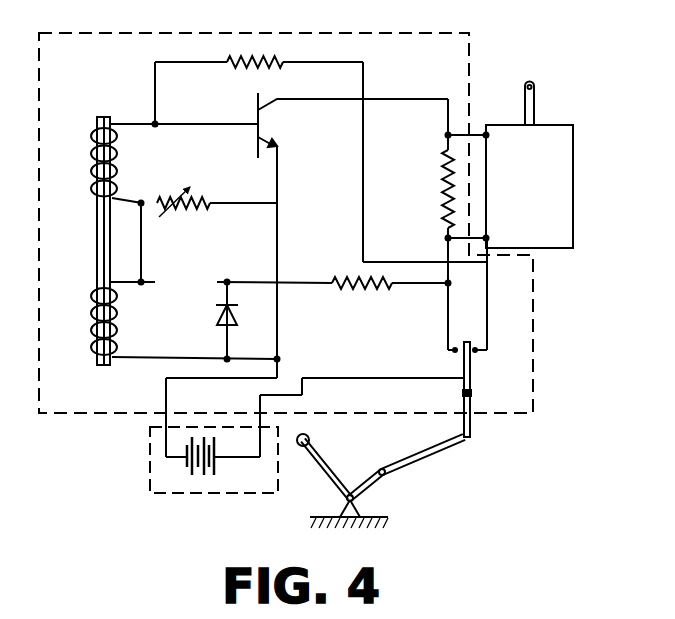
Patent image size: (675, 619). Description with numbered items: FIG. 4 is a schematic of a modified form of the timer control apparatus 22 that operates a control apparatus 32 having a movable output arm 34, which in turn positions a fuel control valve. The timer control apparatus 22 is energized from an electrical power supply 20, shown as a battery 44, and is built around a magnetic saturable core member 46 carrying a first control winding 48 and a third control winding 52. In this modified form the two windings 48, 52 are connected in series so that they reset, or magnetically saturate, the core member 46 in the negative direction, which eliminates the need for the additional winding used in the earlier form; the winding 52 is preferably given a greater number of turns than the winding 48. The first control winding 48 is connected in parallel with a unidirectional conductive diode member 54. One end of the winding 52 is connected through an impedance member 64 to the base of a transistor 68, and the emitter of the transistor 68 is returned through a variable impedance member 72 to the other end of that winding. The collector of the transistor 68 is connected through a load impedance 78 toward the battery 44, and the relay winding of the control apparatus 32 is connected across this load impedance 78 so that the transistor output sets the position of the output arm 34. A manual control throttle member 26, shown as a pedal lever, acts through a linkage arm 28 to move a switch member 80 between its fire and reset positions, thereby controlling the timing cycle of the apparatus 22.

The electrical power supply 20 is at (148, 470).
The first timer control apparatus 22 is at (409, 30).
The manual control throttle member 26 is at (310, 438).
The linkage arm 28 is at (420, 457).
The control apparatus 32 is at (574, 203).
The movable output arm 34 is at (536, 105).
The battery 44 is at (208, 478).
The magnetic saturable core member 46 is at (108, 117).
The first control winding 48 is at (96, 306).
The third control winding 52 is at (96, 150).
The diode member 54 is at (222, 320).
The impedance member 64 is at (246, 68).
The transistor 68 is at (266, 123).
The variable impedance member 72 is at (172, 215).
The load impedance 78 is at (440, 175).
The switch member 80 is at (472, 367).